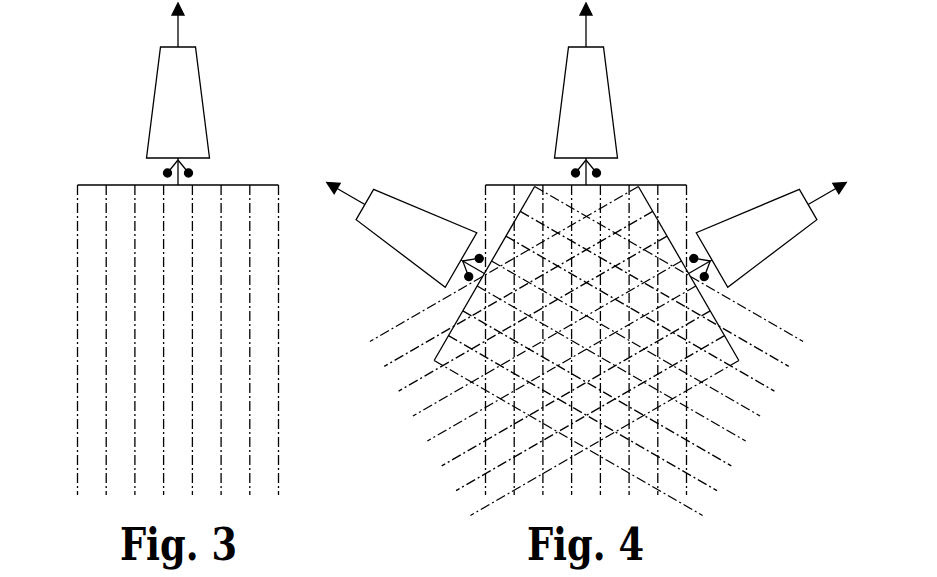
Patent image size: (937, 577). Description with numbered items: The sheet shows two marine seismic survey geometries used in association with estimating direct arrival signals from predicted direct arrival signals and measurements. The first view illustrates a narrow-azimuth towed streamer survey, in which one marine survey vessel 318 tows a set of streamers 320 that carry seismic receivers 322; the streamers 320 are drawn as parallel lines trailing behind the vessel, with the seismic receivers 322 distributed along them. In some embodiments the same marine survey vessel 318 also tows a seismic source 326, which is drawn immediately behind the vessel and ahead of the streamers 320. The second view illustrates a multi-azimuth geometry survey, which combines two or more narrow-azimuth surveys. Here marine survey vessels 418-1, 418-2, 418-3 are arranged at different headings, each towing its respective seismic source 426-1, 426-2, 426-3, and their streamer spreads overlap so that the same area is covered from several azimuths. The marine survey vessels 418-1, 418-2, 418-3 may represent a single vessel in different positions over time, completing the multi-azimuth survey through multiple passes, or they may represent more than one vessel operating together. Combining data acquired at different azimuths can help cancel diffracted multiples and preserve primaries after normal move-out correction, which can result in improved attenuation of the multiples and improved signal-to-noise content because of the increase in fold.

In FIG. 3, the marine survey vessel 318 is at (205, 98).
In FIG. 3, the seismic source 326 is at (150, 173).
In FIG. 3, the seismic receivers 322 is at (77, 202).
In FIG. 3, the streamers 320 is at (77, 238).
In FIG. 4, the marine survey vessel 418-1 is at (387, 248).
In FIG. 4, the marine survey vessel 418-2 is at (612, 98).
In FIG. 4, the marine survey vessel 418-3 is at (785, 248).
In FIG. 4, the seismic source 426-1 is at (479, 232).
In FIG. 4, the seismic source 426-2 is at (617, 173).
In FIG. 4, the seismic source 426-3 is at (694, 232).